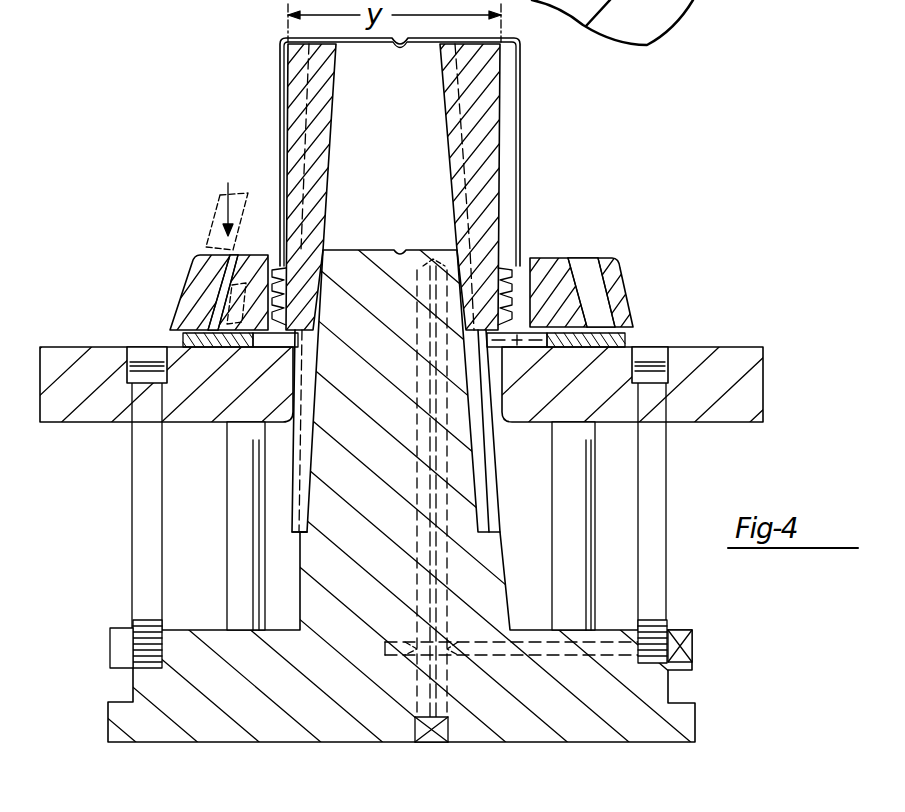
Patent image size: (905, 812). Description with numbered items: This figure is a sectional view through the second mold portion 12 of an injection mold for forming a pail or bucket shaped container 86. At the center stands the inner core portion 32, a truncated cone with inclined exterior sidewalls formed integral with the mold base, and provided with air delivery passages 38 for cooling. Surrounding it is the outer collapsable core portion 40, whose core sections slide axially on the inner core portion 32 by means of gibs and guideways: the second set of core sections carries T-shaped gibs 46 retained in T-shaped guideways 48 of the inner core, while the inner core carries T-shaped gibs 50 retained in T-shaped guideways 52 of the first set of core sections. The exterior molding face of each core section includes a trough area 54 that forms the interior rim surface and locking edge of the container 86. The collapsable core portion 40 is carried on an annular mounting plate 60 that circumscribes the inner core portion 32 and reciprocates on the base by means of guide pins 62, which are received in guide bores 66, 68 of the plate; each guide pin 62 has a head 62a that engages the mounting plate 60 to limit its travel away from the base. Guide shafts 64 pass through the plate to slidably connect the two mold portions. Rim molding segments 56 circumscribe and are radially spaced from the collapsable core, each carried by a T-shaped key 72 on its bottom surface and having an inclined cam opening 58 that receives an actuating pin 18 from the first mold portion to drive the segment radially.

The second mold portion 12 is at (155, 178).
The actuating pin 18 is at (210, 220).
The inner core portion 32 is at (372, 550).
The air delivery passage 38 is at (405, 652).
The outer collapsable core portion 40 is at (485, 163).
The T-shaped gib 46 is at (450, 98).
The T-shaped guideway 48 is at (488, 497).
The T-shaped gib 50 is at (296, 532).
The T-shaped guideway 52 is at (313, 115).
The trough area 54 is at (275, 268).
The rim molding segment 56 is at (190, 270).
The cam opening 58 is at (582, 263).
The mounting plate 60 is at (745, 380).
The guide pin 62 is at (140, 578).
The head 62a is at (150, 373).
The guide shaft 64 is at (237, 577).
The guide bore 66 is at (135, 352).
The guide bore 68 is at (647, 352).
The T-shaped key 72 is at (568, 345).
The container 86 is at (521, 100).